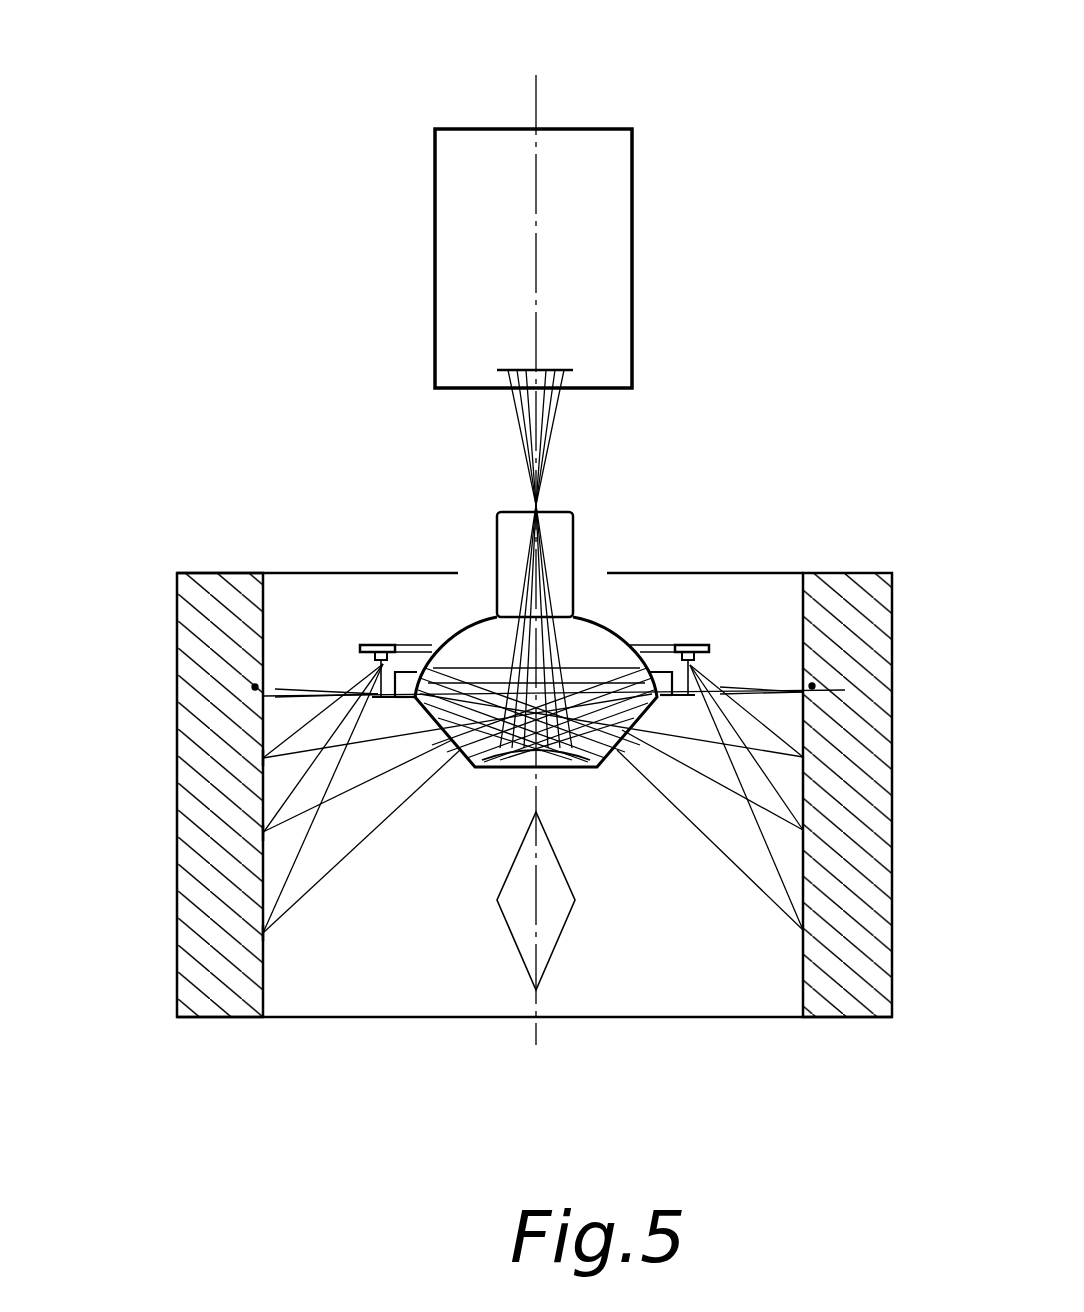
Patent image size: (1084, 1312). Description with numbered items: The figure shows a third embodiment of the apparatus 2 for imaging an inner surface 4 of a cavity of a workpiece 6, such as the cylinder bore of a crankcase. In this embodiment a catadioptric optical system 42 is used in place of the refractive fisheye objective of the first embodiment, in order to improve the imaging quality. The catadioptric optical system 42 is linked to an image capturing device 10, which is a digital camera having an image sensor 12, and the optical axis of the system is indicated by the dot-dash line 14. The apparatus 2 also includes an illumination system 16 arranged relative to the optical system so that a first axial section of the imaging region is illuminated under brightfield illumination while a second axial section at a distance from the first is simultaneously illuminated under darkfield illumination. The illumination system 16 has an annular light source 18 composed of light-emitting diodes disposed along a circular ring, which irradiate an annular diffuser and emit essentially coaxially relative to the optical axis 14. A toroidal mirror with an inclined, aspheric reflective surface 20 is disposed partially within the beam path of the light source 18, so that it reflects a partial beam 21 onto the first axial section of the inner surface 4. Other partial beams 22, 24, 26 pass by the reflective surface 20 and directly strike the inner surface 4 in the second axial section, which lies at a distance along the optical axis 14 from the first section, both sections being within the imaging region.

The apparatus 2 is at (766, 95).
The inner surface 4 is at (803, 606).
The workpiece 6 is at (857, 582).
The image capturing device 10 is at (475, 214).
The image sensor 12 is at (532, 368).
The optical axis 14 is at (546, 93).
The illumination system 16 is at (393, 622).
The annular light source 18 is at (372, 647).
The reflective surface 20 is at (375, 682).
The partial beam 21 is at (449, 707).
The partial beam 22 is at (263, 758).
The partial beam 24 is at (263, 834).
The partial beam 26 is at (263, 936).
The catadioptric optical system 42 is at (493, 650).